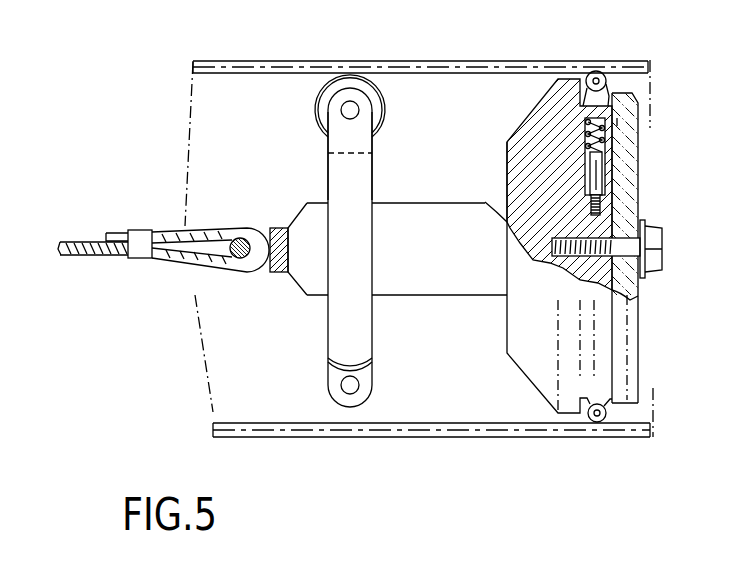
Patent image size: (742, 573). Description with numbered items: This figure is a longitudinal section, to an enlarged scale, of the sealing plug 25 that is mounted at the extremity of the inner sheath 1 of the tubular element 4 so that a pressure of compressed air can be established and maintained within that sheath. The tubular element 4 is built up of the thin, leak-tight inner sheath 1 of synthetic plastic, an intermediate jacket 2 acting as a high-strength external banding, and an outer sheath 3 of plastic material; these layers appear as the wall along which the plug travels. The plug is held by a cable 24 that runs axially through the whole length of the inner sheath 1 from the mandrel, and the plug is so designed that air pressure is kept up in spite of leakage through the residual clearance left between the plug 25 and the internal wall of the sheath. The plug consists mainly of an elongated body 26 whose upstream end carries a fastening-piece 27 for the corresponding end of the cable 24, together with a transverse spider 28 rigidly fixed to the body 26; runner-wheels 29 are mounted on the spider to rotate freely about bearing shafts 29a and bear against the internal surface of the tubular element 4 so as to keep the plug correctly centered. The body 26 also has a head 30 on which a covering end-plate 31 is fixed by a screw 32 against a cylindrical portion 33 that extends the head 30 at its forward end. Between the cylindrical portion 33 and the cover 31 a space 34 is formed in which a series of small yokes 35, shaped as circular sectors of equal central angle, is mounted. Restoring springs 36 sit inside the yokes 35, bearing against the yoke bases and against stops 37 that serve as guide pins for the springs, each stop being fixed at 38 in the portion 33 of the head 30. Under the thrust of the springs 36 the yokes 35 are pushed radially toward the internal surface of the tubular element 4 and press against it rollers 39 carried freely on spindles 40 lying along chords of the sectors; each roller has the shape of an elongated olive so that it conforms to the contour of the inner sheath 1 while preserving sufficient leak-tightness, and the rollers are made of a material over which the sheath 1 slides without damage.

The inner sheath 1 is at (483, 70).
The intermediate jacket 2 is at (453, 62).
The outer sheath 3 is at (418, 61).
The tubular element 4 is at (296, 59).
The cable 24 is at (96, 242).
The sealing plug 25 is at (407, 309).
The elongated body 26 is at (410, 210).
The fastening-piece 27 is at (238, 240).
The transverse spider 28 is at (362, 173).
The runner-wheels 29 is at (327, 92).
The bearing shafts 29a is at (342, 112).
The head 30 is at (532, 120).
The covering end-plate 31 is at (633, 205).
The screw 32 is at (655, 262).
The cylindrical portion 33 is at (607, 268).
The space 34 is at (616, 122).
The yokes 35 is at (602, 97).
The restoring springs 36 is at (580, 138).
The stops 37 is at (598, 168).
The fixing point 38 is at (605, 207).
The rollers 39 is at (602, 72).
The spindles 40 is at (628, 408).